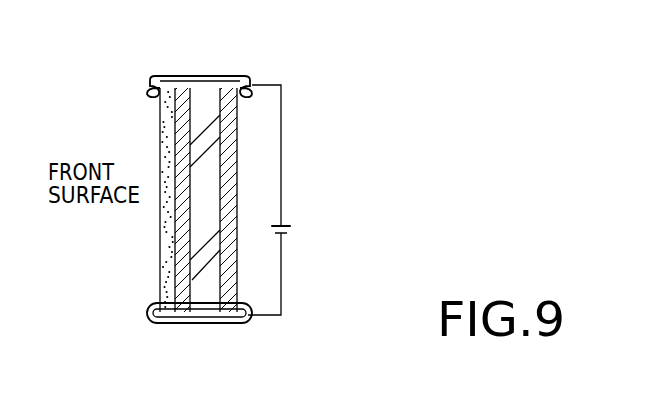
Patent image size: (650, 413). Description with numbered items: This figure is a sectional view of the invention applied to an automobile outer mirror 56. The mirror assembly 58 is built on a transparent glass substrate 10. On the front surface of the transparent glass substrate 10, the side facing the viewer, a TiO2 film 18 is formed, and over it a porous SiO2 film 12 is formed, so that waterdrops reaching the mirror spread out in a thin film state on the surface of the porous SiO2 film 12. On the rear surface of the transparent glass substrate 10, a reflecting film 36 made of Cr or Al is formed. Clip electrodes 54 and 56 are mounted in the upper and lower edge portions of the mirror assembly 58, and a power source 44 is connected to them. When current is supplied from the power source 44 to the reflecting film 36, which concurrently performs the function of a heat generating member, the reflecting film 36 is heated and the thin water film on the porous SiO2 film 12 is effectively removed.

The transparent glass substrate 10 is at (203, 300).
The porous SiO2 film 12 is at (165, 323).
The TiO2 film 18 is at (180, 323).
The reflecting film 36 is at (232, 285).
The power source 44 is at (284, 236).
The clip electrode 54 is at (200, 77).
The clip electrode 56 is at (240, 323).
The mirror assembly 58 is at (372, 252).